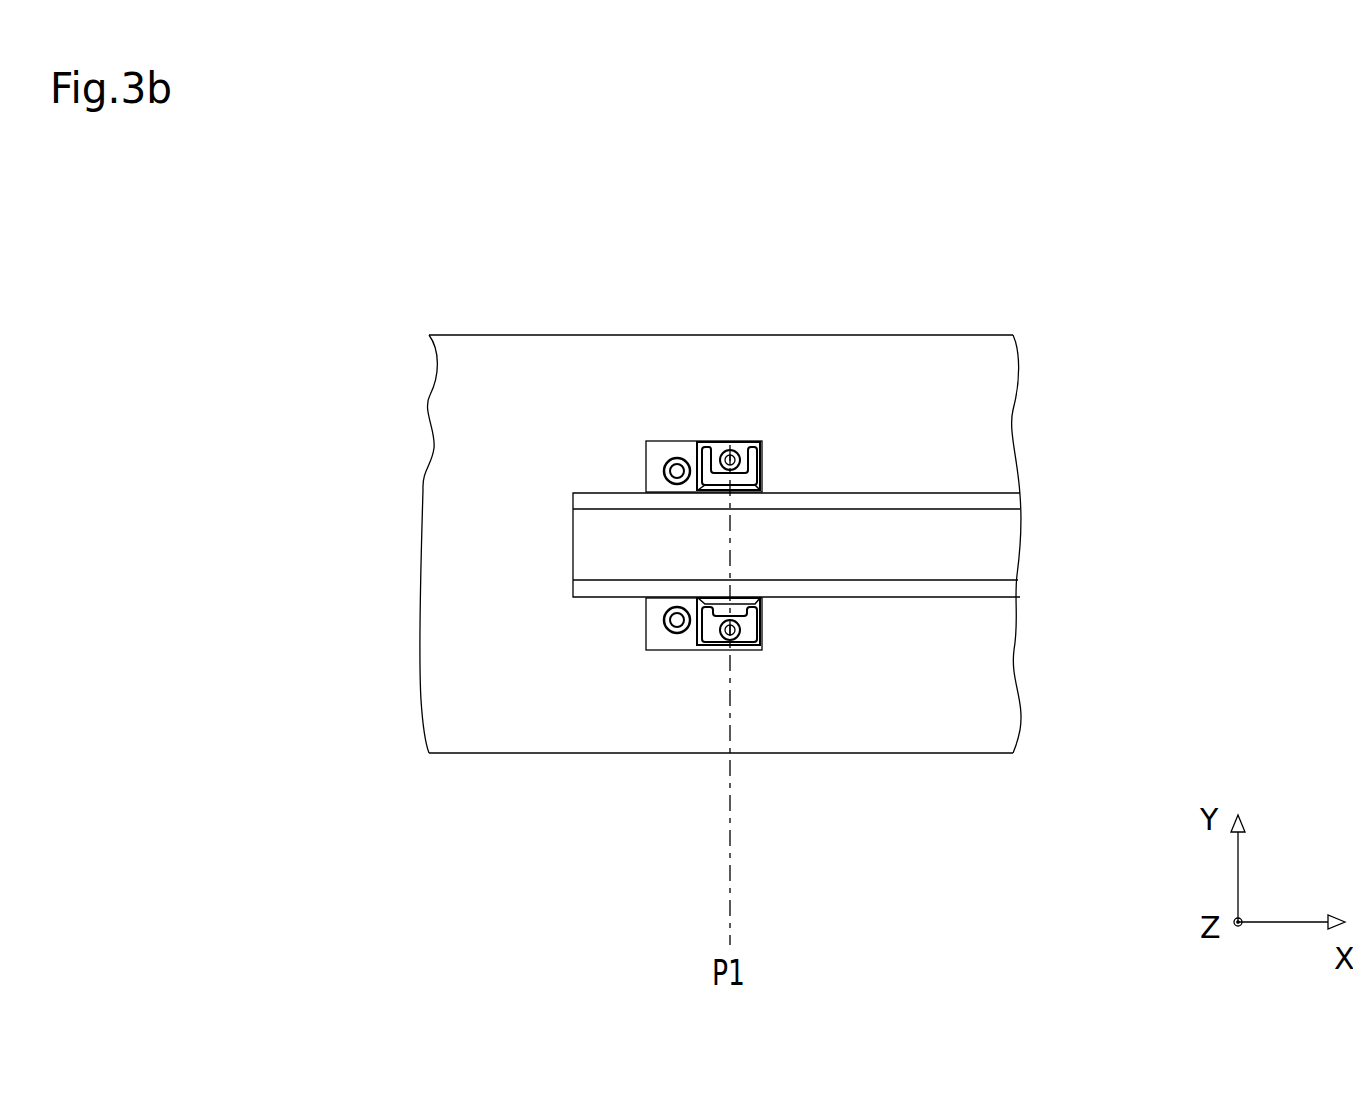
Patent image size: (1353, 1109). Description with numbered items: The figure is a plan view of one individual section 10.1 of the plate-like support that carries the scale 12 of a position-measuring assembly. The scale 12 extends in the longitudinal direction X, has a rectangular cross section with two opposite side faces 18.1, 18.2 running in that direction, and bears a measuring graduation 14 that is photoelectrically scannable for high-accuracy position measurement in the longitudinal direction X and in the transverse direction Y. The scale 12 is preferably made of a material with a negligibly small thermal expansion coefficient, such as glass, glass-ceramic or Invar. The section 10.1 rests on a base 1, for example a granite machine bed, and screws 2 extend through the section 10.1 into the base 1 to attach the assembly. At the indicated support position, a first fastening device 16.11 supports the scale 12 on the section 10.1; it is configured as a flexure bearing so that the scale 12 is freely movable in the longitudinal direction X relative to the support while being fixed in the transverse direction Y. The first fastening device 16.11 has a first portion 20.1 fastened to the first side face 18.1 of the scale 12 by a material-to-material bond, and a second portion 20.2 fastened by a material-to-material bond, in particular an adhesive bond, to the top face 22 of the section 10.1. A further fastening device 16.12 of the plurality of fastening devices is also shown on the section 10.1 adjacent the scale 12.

The base 1 is at (472, 660).
The screws 2 is at (667, 465).
The individual section 10.1 is at (667, 650).
The scale 12 is at (975, 500).
The measuring graduation 14 is at (1007, 555).
The first fastening device 16.11 is at (750, 623).
The fastening device 16.12 is at (727, 442).
The first side face 18.1 is at (945, 598).
The second side face 18.2 is at (918, 492).
The first portion 20.1 is at (762, 612).
The second portion 20.2 is at (742, 632).
The top face 22 is at (655, 633).